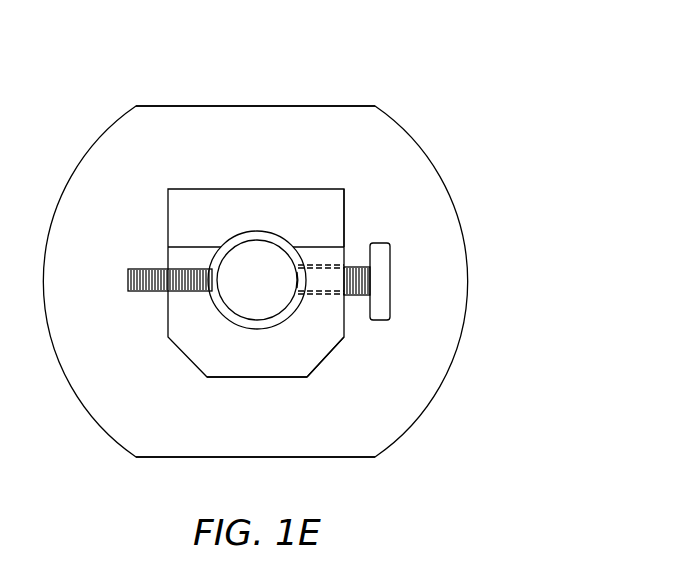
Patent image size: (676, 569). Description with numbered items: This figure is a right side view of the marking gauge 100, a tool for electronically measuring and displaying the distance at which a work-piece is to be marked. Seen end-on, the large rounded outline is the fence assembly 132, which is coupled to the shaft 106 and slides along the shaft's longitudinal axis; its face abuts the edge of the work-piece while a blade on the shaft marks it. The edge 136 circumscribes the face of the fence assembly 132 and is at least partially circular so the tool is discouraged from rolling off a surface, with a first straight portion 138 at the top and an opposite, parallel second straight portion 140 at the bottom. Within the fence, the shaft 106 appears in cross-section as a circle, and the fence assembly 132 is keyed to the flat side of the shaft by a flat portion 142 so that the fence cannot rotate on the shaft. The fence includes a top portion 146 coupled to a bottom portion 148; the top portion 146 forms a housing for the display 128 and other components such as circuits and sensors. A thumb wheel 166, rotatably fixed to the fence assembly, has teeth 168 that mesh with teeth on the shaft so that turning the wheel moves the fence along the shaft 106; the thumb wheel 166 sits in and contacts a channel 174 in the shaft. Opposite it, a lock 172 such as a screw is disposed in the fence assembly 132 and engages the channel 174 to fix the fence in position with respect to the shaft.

The marking gauge 100 is at (513, 40).
The fence assembly 132 is at (468, 262).
The first straight portion 138 is at (255, 105).
The second straight portion 140 is at (257, 458).
The display 128 is at (256, 188).
The flat portion 142 is at (196, 246).
The top portion 146 is at (372, 193).
The bottom portion 148 is at (325, 358).
The edge 136 is at (231, 378).
The shaft 106 is at (257, 322).
The channel 174 is at (286, 286).
The thumb wheel 166 is at (126, 280).
The teeth 168 is at (165, 268).
The lock 172 is at (392, 280).